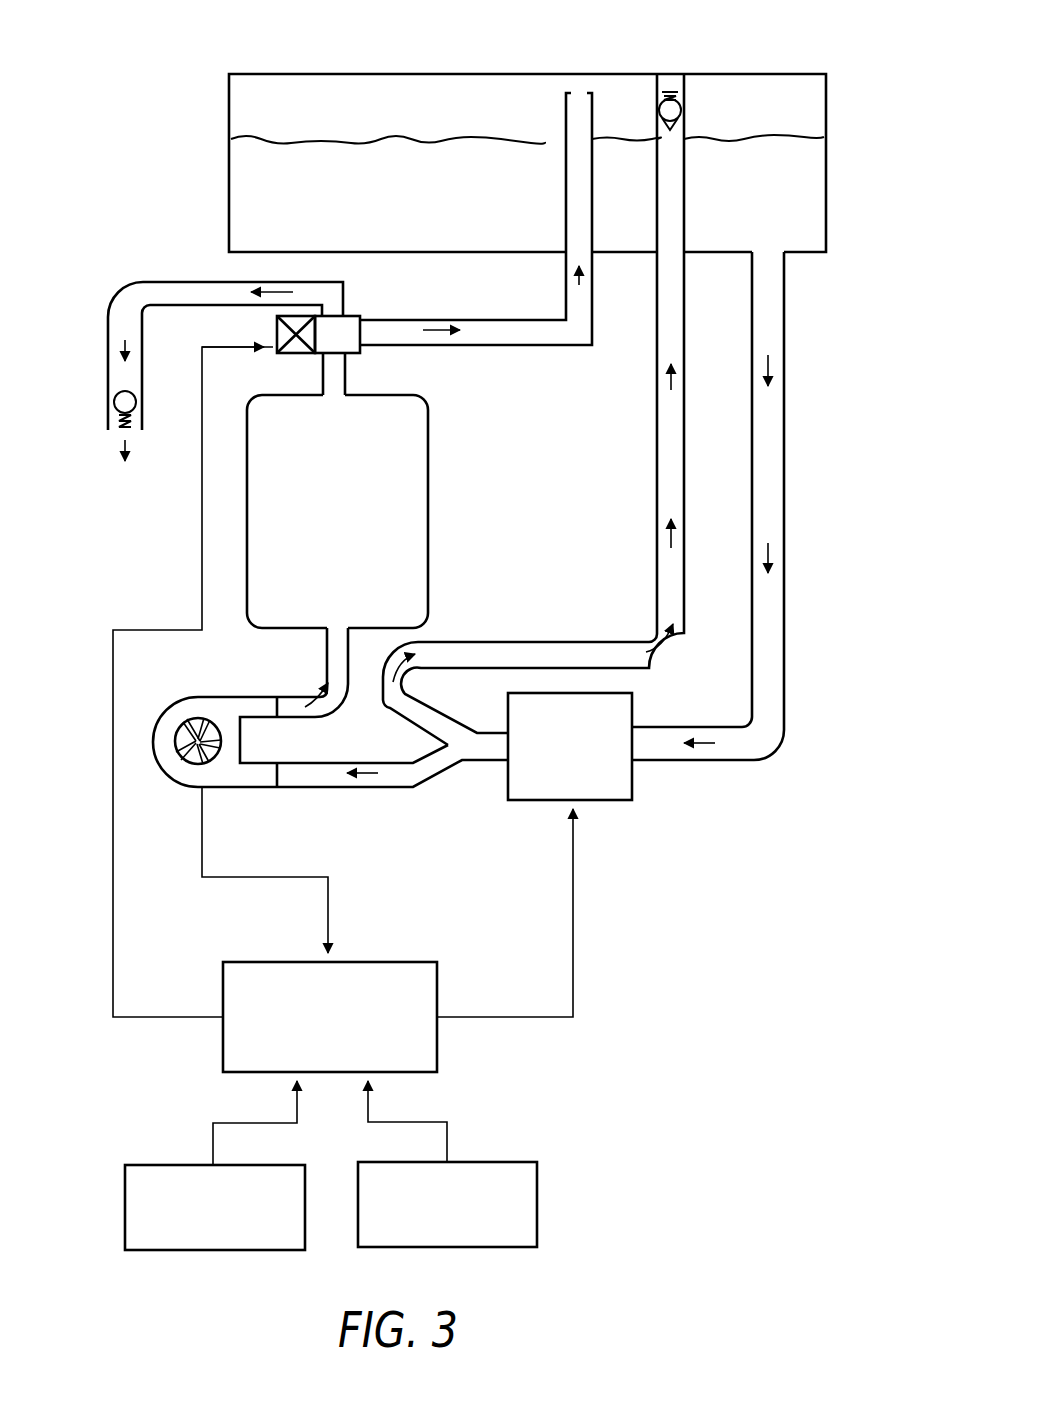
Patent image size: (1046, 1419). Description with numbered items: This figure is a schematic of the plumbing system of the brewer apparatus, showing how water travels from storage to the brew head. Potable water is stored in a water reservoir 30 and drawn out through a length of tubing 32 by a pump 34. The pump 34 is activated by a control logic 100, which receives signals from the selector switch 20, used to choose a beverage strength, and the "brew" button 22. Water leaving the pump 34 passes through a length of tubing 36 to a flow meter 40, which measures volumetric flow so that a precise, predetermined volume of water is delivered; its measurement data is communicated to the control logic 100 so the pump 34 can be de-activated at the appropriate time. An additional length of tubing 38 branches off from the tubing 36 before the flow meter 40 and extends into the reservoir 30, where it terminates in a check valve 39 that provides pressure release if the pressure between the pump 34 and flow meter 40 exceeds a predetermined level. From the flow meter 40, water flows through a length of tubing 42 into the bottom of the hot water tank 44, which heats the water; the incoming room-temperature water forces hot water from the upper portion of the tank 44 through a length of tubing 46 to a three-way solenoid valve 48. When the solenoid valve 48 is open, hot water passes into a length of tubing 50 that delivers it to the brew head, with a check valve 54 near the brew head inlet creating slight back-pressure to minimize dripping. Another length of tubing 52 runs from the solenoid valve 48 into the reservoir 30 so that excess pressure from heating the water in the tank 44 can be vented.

The selector switch 20 is at (160, 1163).
The "brew" button 22 is at (498, 1160).
The water reservoir 30 is at (767, 83).
The length of tubing 32 is at (780, 415).
The pump 34 is at (605, 788).
The length of tubing 36 is at (367, 780).
The additional length of tubing 38 is at (563, 647).
The check valve 39 is at (678, 107).
The flow meter 40 is at (218, 703).
The length of tubing 42 is at (333, 652).
The hot water tank 44 is at (413, 485).
The length of tubing 46 is at (335, 370).
The three-way solenoid valve 48 is at (358, 318).
The length of tubing 50 is at (180, 288).
The length of tubing 52 is at (483, 337).
The check valve 54 is at (113, 400).
The control logic 100 is at (422, 965).